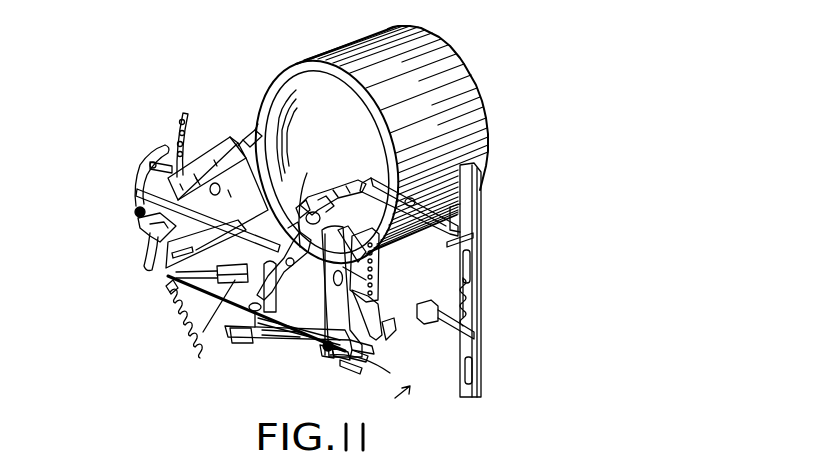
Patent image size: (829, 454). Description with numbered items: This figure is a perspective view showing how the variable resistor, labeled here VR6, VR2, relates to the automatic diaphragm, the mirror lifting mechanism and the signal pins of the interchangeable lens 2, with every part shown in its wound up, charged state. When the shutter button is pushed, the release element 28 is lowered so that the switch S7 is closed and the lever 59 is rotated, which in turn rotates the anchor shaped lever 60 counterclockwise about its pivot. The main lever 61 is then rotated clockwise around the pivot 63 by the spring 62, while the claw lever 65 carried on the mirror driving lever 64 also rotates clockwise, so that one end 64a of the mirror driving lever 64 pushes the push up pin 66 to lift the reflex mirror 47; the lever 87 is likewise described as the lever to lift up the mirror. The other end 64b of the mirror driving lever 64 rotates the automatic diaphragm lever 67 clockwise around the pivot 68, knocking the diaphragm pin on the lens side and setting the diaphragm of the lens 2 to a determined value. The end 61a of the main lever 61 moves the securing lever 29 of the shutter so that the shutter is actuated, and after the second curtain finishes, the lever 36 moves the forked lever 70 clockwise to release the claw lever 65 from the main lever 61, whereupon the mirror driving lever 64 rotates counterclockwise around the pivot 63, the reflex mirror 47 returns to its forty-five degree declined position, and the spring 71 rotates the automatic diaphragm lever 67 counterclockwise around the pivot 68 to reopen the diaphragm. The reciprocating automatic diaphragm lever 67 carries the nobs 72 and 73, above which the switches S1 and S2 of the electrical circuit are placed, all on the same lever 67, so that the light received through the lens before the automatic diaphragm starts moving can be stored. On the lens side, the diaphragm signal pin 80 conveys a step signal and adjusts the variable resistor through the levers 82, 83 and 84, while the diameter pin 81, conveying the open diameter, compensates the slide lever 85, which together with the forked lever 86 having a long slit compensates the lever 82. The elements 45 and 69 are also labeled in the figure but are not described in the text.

The lens 2 is at (456, 85).
The release element 28 is at (473, 213).
The securing lever 29 is at (343, 356).
The lever 36 is at (323, 190).
The pin 45 is at (474, 240).
The reflex mirror 47 is at (236, 232).
The lever 59 is at (417, 196).
The anchor shaped lever 60 is at (345, 182).
The main lever 61 is at (367, 350).
The one end of the main lever 61a is at (360, 372).
The spring 62 is at (373, 274).
The pivot 63 is at (380, 315).
The mirror driving lever 64 is at (378, 290).
The one end of the mirror driving lever 64a is at (298, 333).
The other end of the mirror driving lever 64b is at (366, 360).
The claw lever 65 is at (297, 337).
The push up pin 66 is at (342, 236).
The automatic diaphragm lever 67 is at (190, 296).
The pivot 68 is at (250, 347).
The rod 69 is at (263, 342).
The forked lever 70 is at (299, 205).
The spring 71 is at (180, 303).
The nob 72 is at (177, 277).
The nob 73 is at (327, 355).
The diaphragm signal pin 80 is at (250, 128).
The diameter pin 81 is at (298, 212).
The lever 82 is at (213, 163).
The lever 83 is at (214, 197).
The lever 84 is at (177, 150).
The slide lever 85 is at (163, 267).
The forked lever 86 is at (153, 238).
The lever to lift up the mirror 87 is at (388, 339).
The switch S1 is at (219, 317).
The switch S2 is at (234, 337).
The switch S7 is at (452, 294).
The variable resistor VR6 is at (103, 178).
The variable resistor VR2 is at (136, 163).